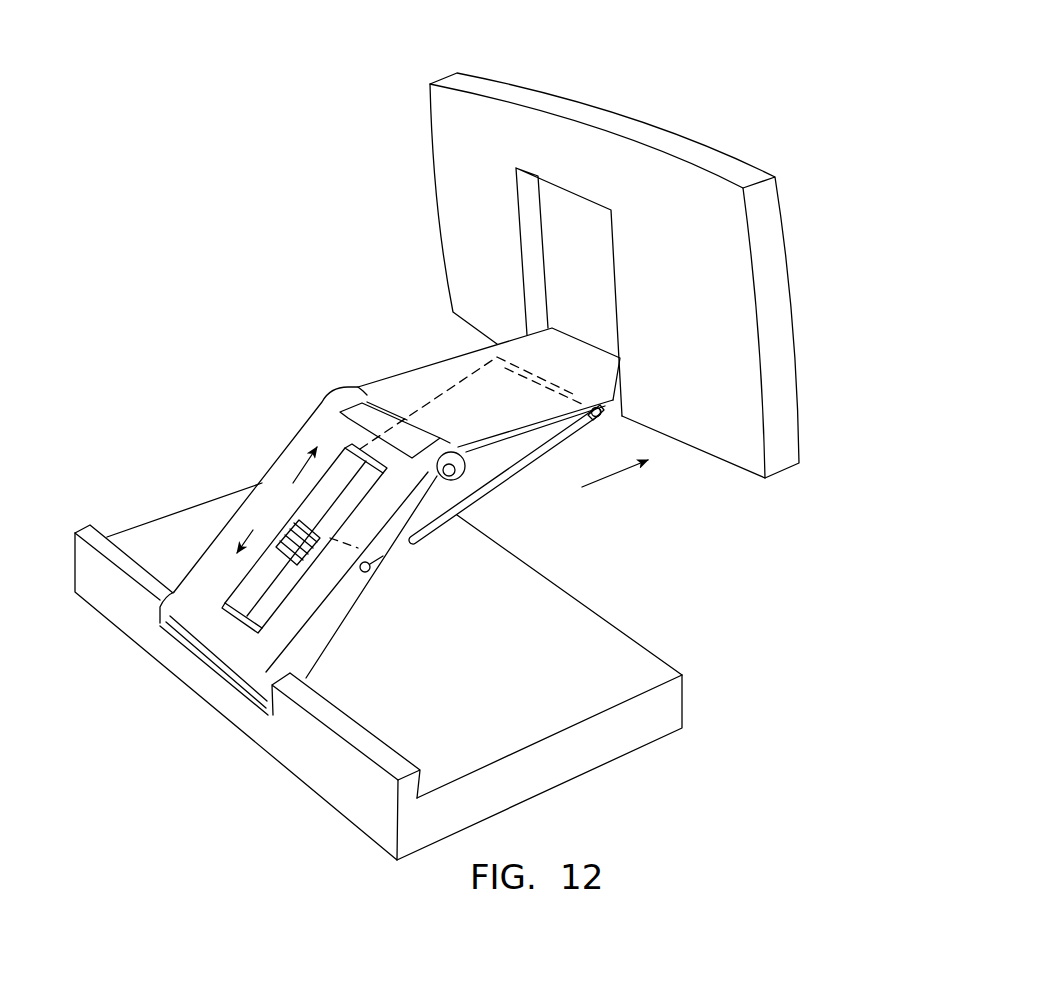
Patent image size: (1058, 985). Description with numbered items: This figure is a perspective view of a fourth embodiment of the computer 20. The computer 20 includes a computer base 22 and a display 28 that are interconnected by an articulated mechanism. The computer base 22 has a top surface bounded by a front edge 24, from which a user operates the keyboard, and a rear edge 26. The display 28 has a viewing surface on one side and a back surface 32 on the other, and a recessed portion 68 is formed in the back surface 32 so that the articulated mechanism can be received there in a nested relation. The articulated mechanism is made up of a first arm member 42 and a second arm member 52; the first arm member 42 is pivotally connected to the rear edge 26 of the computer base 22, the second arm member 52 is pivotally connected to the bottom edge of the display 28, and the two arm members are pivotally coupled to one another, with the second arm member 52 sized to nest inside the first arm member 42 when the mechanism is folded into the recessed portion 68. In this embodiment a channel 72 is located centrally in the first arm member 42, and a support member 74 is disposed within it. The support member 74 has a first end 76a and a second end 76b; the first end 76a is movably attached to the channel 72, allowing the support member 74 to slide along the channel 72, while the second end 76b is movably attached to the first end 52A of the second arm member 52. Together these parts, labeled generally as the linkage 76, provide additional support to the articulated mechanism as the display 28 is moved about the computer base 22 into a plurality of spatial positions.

The computer 20 is at (639, 66).
The computer base 22 is at (603, 695).
The front edge 24 is at (670, 662).
The rear edge 26 is at (365, 807).
The display 28 is at (778, 298).
The back surface 32 is at (458, 142).
The first arm member 42 is at (197, 618).
The second arm member 52 is at (405, 370).
The first end of second arm member 52A is at (613, 405).
The recessed portion 68 is at (568, 275).
The channel 72 is at (245, 622).
The support member 74 is at (515, 477).
The linkage 76 is at (362, 575).
The first end 76a is at (275, 488).
The second end 76b is at (607, 420).